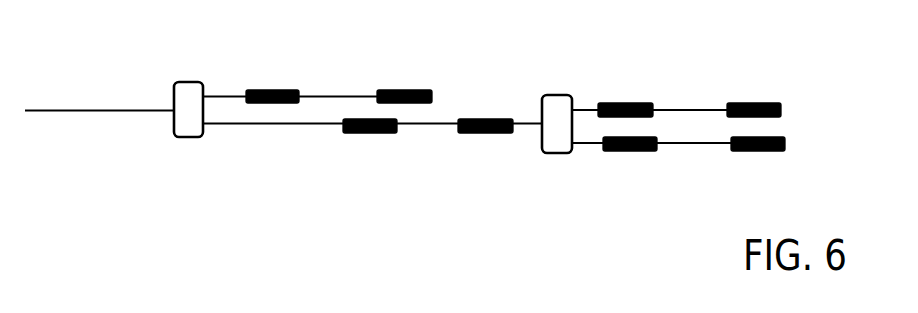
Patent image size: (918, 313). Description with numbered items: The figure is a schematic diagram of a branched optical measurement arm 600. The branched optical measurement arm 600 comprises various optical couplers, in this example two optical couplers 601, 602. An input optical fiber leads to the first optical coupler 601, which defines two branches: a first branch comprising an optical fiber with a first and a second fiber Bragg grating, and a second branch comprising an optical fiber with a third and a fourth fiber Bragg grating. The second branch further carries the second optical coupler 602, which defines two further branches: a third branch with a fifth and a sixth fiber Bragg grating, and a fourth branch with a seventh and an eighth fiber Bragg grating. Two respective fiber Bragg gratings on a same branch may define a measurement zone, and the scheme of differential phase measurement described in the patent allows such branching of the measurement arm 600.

The branched optical measurement arm 600 is at (98, 60).
The first optical coupler 601 is at (193, 73).
The second optical coupler 602 is at (562, 88).